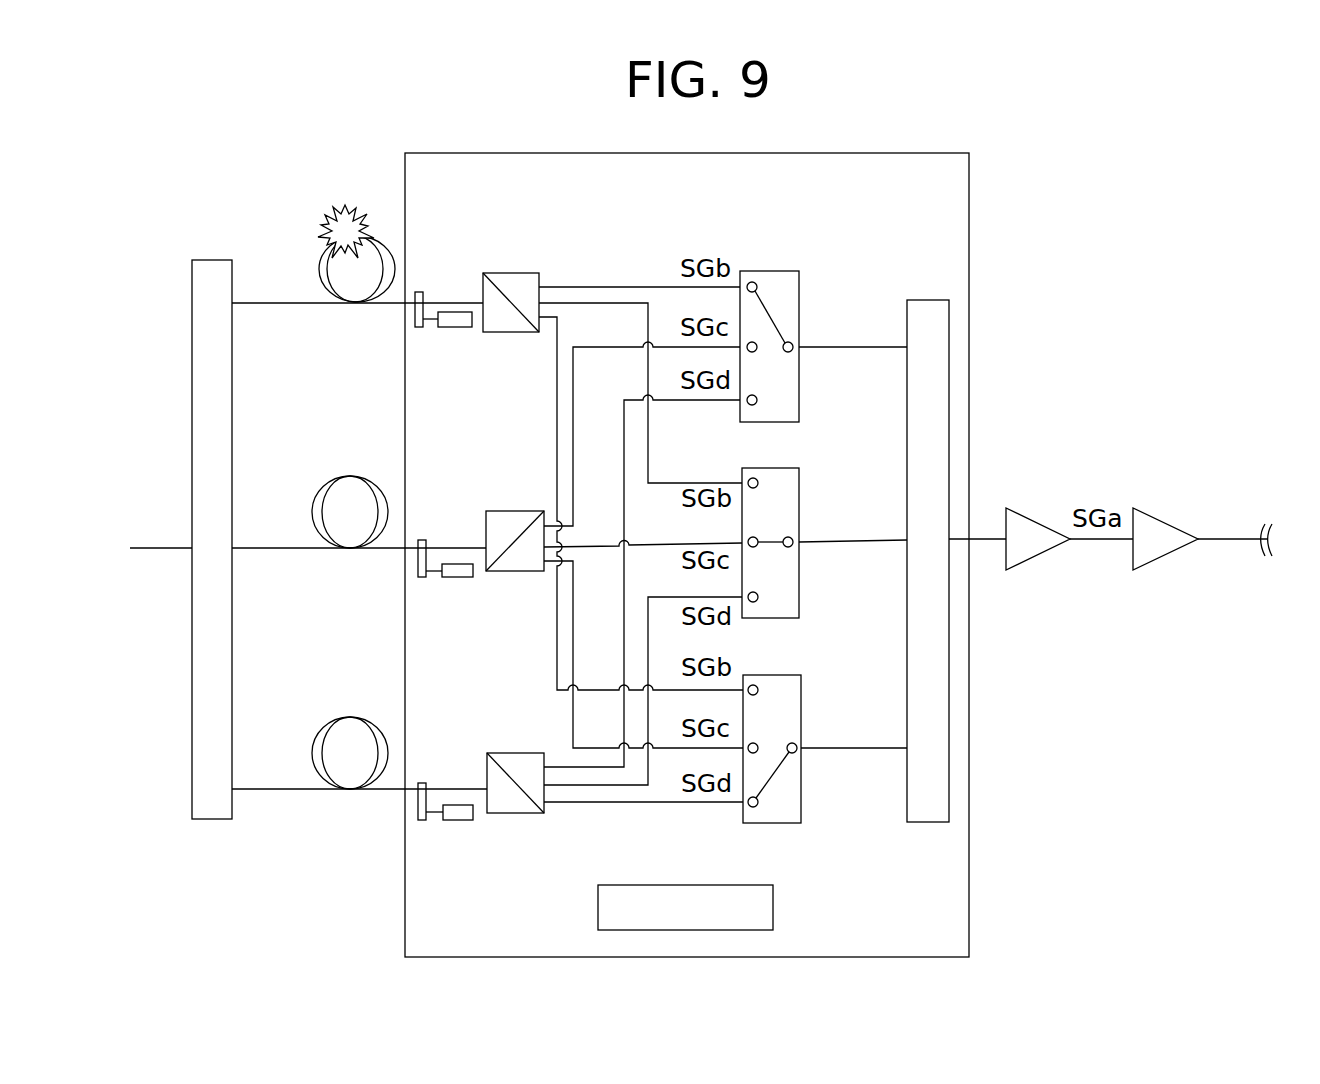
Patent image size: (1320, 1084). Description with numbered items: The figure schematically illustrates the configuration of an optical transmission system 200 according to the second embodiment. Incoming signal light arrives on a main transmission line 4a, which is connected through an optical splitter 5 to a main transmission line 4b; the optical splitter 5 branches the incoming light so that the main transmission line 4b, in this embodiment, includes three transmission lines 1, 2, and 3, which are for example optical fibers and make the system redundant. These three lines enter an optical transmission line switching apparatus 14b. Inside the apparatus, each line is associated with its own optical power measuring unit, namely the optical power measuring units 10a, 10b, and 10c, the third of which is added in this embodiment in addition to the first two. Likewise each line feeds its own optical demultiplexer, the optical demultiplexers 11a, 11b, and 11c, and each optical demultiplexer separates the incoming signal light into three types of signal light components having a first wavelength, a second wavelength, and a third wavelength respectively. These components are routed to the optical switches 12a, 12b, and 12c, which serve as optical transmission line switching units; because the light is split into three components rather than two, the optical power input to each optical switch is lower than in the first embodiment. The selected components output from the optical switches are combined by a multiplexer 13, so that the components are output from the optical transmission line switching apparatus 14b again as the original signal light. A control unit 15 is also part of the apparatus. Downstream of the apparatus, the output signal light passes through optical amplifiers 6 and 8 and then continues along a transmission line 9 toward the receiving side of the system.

The optical transmission system 200 is at (290, 116).
The optical transmission line switching apparatus 14b is at (453, 152).
The main transmission line 4a is at (153, 551).
The main transmission line 4b is at (393, 215).
The transmission line 1 is at (260, 301).
The transmission line 2 is at (262, 547).
The transmission line 3 is at (261, 788).
The optical splitter 5 is at (212, 821).
The optical power measuring unit 10a is at (455, 329).
The optical power measuring unit 10b is at (448, 579).
The optical power measuring unit 10c is at (447, 822).
The optical demultiplexer 11a is at (510, 271).
The optical demultiplexer 11b is at (515, 573).
The optical demultiplexer 11c is at (514, 815).
The optical switch 12a is at (801, 307).
The optical switch 12b is at (801, 500).
The optical switch 12c is at (803, 712).
The multiplexer 13 is at (928, 824).
The control unit 15 is at (685, 884).
The optical amplifier 6 is at (1037, 560).
The optical amplifier 8 is at (1168, 560).
The transmission line 9 is at (1223, 535).